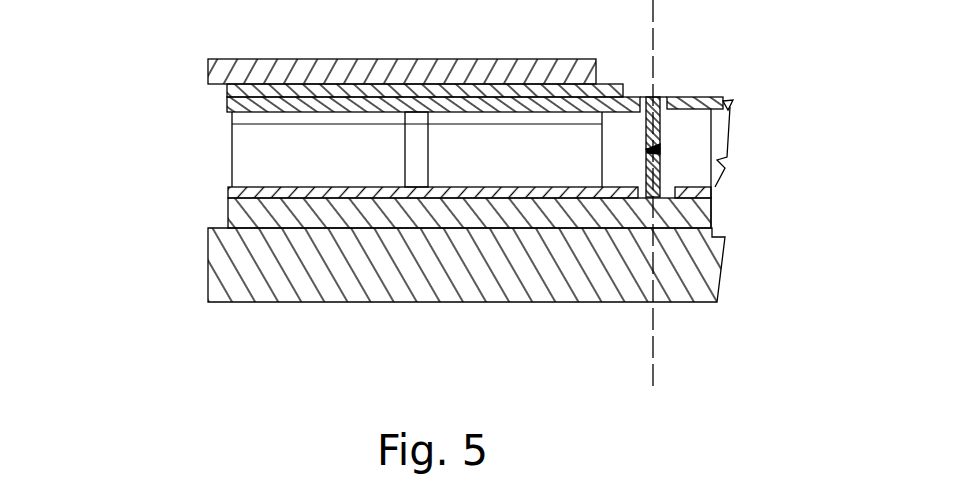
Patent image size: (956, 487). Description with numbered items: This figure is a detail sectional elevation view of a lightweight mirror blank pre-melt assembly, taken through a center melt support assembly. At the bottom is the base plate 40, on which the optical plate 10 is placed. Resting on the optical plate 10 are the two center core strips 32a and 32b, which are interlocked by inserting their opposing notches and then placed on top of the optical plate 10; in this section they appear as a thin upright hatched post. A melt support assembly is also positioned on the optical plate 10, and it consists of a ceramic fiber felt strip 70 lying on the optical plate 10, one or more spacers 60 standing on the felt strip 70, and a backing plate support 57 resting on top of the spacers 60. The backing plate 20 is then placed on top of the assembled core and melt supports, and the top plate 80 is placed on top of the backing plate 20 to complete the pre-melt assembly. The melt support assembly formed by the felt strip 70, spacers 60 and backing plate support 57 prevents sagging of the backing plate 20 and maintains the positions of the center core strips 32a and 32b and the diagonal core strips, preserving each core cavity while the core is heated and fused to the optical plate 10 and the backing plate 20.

The top plate 80 is at (333, 63).
The backing plate 20 is at (237, 93).
The first backing plate support 57 is at (236, 106).
The spacer 60 is at (277, 157).
The ceramic fiber felt strip 70 is at (237, 193).
The optical plate 10 is at (288, 213).
The base plate 40 is at (280, 267).
The center core strip 32b is at (660, 128).
The center core strip 32a is at (660, 173).